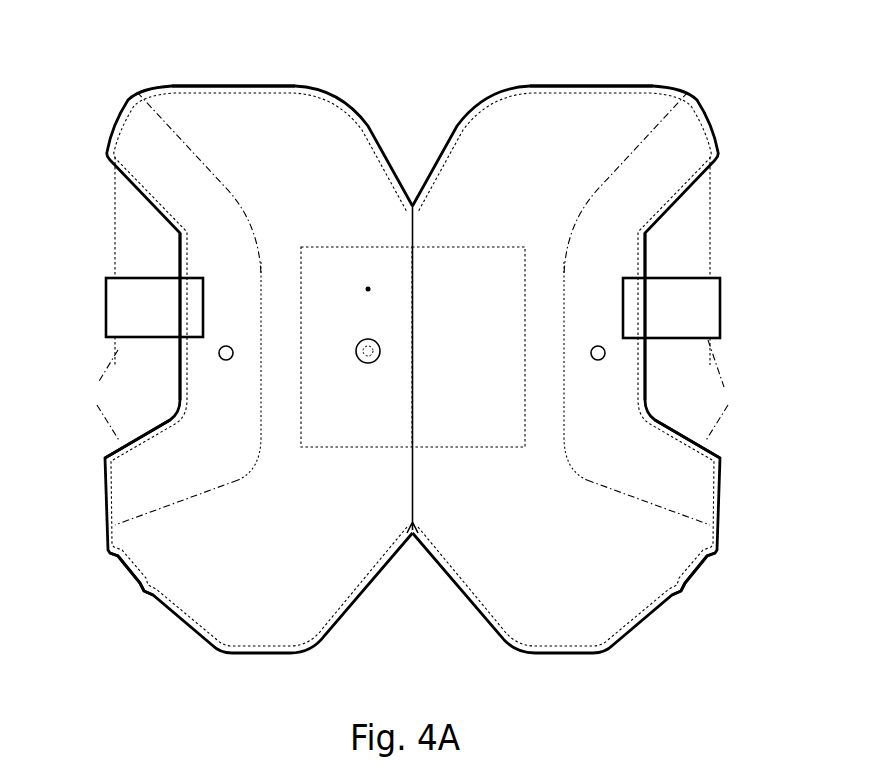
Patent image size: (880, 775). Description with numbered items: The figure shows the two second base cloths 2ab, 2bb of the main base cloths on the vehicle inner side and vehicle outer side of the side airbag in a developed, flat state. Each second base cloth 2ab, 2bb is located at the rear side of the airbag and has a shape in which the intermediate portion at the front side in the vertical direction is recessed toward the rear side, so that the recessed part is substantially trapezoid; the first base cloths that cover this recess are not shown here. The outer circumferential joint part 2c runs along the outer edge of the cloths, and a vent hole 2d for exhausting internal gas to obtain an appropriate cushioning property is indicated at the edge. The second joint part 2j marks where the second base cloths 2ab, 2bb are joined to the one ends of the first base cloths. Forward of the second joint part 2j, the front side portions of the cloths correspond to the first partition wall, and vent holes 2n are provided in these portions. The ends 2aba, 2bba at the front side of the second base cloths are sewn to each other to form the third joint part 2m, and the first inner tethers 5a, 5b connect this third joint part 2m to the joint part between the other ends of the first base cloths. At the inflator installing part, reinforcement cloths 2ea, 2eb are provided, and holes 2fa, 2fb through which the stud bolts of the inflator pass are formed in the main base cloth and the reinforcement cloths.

The second base cloth 2ab is at (264, 625).
The second base cloth 2bb is at (565, 625).
The outer circumferential joint part 2c is at (232, 84).
The second joint part 2j is at (163, 510).
The reinforcement cloth 2ea is at (367, 263).
The reinforcement cloth 2eb is at (481, 262).
The hole 2fa is at (360, 290).
The hole 2fb is at (362, 364).
The first inner tether 5a is at (132, 298).
The first inner tether 5b is at (693, 308).
The front side end of second base cloth 2aba is at (178, 356).
The front side end of second base cloth 2bba is at (648, 356).
The third joint part 2m is at (110, 425).
The vent hole 2n is at (226, 362).
The vent hole 2d is at (128, 566).